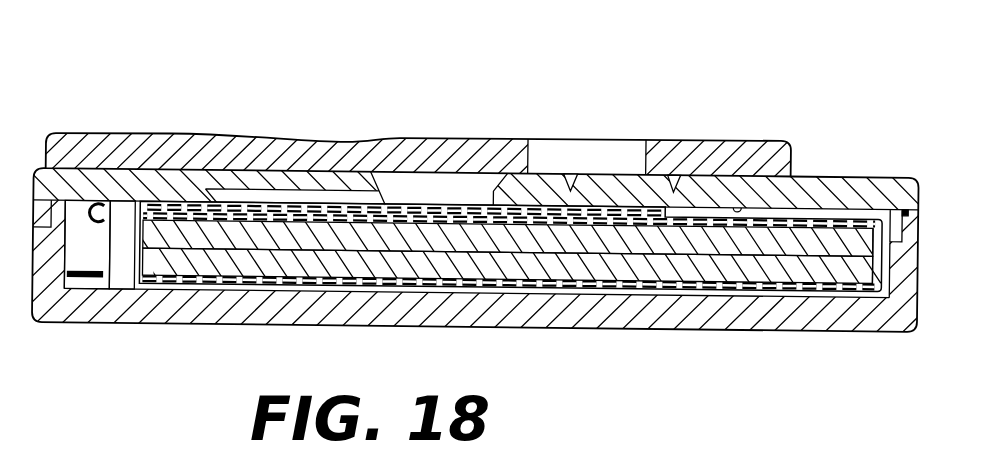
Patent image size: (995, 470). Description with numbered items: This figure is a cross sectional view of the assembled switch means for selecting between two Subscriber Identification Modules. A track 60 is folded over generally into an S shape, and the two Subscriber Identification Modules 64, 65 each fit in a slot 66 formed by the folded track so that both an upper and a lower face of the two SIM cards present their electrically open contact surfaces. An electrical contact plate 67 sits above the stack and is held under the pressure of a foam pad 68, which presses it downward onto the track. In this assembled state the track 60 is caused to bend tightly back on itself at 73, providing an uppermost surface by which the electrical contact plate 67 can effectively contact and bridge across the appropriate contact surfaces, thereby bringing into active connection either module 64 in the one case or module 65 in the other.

The track 60 is at (487, 277).
The Subscriber Identification Module 64 is at (669, 240).
The Subscriber Identification Module 65 is at (812, 272).
The slot 66 is at (377, 278).
The electrical contact plate 67 is at (263, 203).
The foam pad 68 is at (382, 207).
The tight bend of track 73 is at (88, 204).